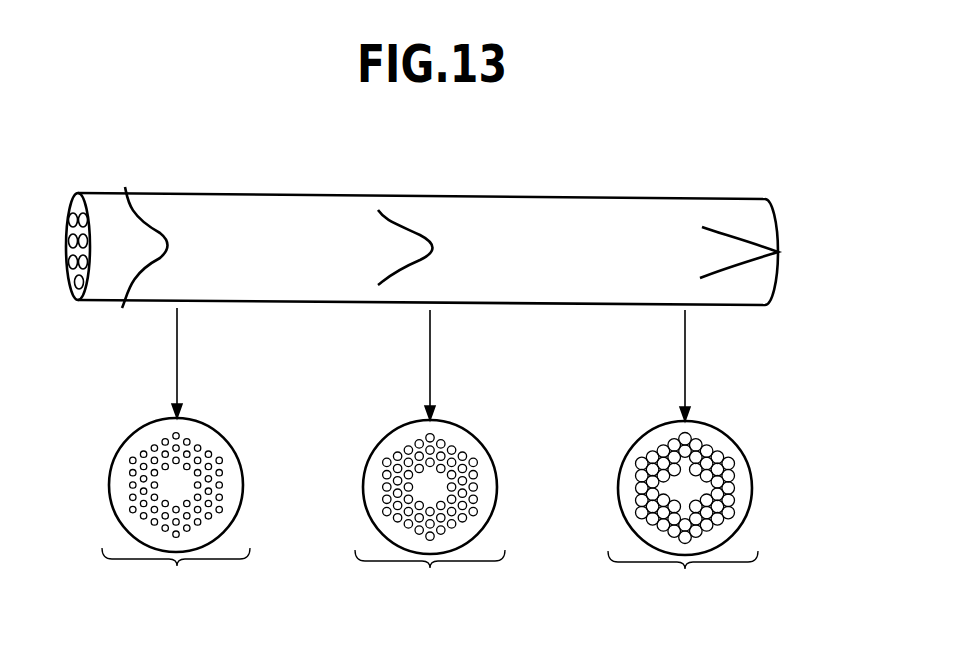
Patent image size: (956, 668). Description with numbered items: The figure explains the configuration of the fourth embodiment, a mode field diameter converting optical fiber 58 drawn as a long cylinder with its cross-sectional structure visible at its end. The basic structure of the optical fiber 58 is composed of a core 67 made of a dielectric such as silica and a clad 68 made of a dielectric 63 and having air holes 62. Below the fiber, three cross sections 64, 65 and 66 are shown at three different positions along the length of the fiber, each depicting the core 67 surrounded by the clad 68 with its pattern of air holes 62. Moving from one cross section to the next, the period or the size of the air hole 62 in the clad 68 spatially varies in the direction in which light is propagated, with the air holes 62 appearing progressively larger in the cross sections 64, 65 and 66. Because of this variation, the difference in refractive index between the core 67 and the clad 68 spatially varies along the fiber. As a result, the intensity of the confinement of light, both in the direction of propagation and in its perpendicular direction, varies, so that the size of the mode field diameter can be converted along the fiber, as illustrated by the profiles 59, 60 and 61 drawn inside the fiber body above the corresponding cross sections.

The mode field diameter converting optical fiber 58 is at (562, 197).
The mode field diameter 59 is at (157, 227).
The mode field diameter 60 is at (400, 227).
The mode field diameter 61 is at (712, 228).
The air hole 62 is at (208, 455).
The dielectric 63 is at (230, 512).
The cross section 64 is at (176, 567).
The cross section 65 is at (430, 569).
The cross section 66 is at (683, 571).
The core 67 is at (170, 478).
The clad 68 is at (158, 515).